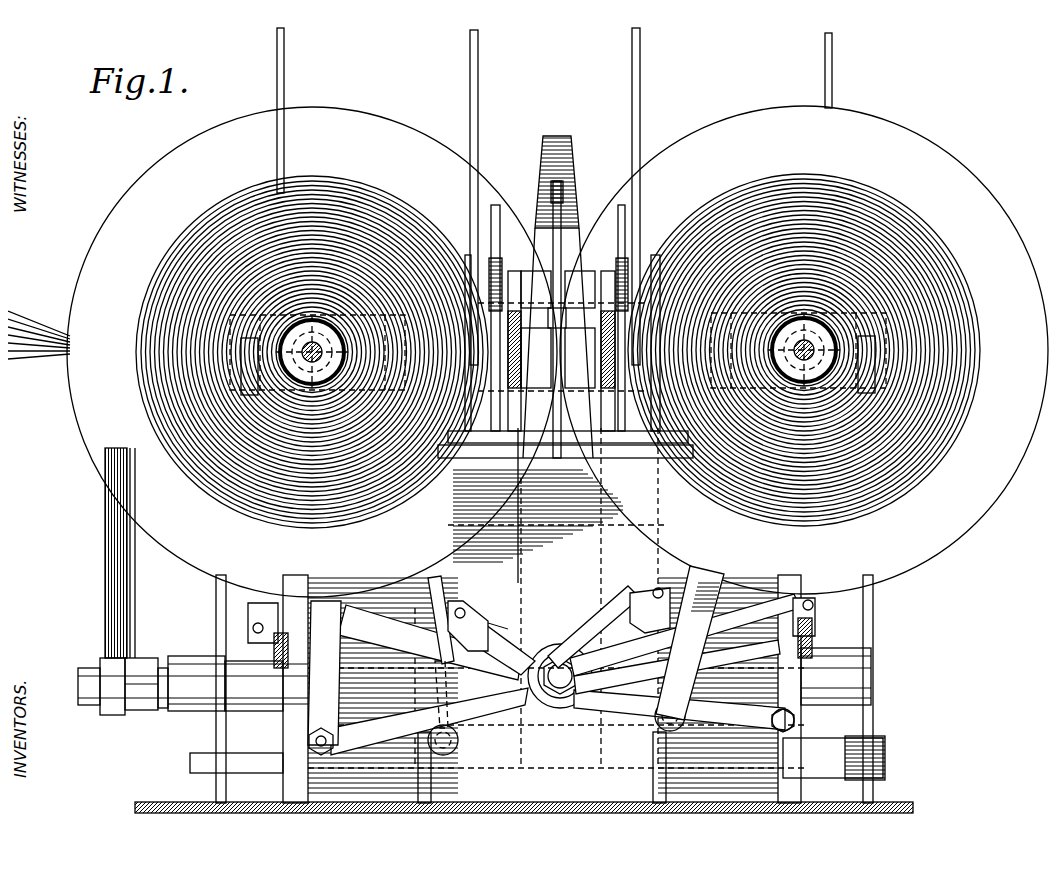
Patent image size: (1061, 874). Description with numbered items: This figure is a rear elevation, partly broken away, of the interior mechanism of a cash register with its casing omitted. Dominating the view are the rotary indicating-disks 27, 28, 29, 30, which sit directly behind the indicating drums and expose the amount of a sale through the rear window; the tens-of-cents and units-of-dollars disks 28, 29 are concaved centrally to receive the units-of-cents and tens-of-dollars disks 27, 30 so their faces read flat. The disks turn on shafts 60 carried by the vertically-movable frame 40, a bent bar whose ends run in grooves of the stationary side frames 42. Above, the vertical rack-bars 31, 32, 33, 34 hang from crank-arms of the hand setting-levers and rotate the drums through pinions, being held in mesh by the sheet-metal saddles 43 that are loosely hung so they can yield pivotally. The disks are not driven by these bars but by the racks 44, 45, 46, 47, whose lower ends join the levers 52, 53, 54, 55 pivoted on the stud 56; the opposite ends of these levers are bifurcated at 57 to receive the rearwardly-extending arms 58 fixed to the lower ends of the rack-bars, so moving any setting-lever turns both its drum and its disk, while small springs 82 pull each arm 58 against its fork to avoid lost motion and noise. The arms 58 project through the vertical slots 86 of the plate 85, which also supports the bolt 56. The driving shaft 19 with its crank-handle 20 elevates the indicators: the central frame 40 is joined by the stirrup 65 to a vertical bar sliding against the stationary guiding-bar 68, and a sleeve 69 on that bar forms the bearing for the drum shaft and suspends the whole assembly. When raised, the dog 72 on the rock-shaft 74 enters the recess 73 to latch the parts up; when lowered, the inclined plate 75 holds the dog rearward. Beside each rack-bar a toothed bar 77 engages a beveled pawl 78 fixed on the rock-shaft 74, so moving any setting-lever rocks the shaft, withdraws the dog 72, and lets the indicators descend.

The operating or driving shaft 19 is at (186, 660).
The operating crank-handle 20 is at (97, 527).
The units-of-cents indicating-disk 27 is at (804, 348).
The tens-of-cents indicating-disk 28 is at (735, 95).
The units-of-dollars indicating-disk 29 is at (90, 214).
The tens-of-dollars indicating-disk 30 is at (309, 347).
The rack-bar 31 is at (276, 40).
The rack-bar 32 is at (470, 66).
The rack-bar 33 is at (624, 57).
The rack-bar 34 is at (824, 58).
The vertically-movable frame 40 is at (410, 357).
The main supporting side frame 42 is at (208, 604).
The saddle 43 is at (470, 200).
The rack 44 is at (756, 638).
The rack 45 is at (702, 583).
The rack 46 is at (426, 652).
The rack 47 is at (285, 720).
The lever 52 is at (555, 667).
The lever 53 is at (532, 608).
The lever 54 is at (438, 743).
The lever 55 is at (565, 674).
The stud or shaft 56 is at (556, 660).
The bifurcated end 57 is at (255, 604).
The rearwardly-extending arm 58 is at (893, 575).
The shaft or stud for indicating-disks 60 is at (338, 344).
The stirrup or bent bar 65 is at (575, 329).
The stationary guiding-bar 68 is at (561, 351).
The sleeve 69 is at (578, 240).
The dog 72 is at (557, 185).
The recess 73 is at (558, 320).
The rock-shaft 74 is at (630, 470).
The inclined plate 75 is at (552, 126).
The toothed vertical bar 77 is at (488, 215).
The pawl 78 is at (488, 404).
The spring 82 is at (270, 642).
The plate 85 is at (558, 598).
The vertical slot 86 is at (290, 784).